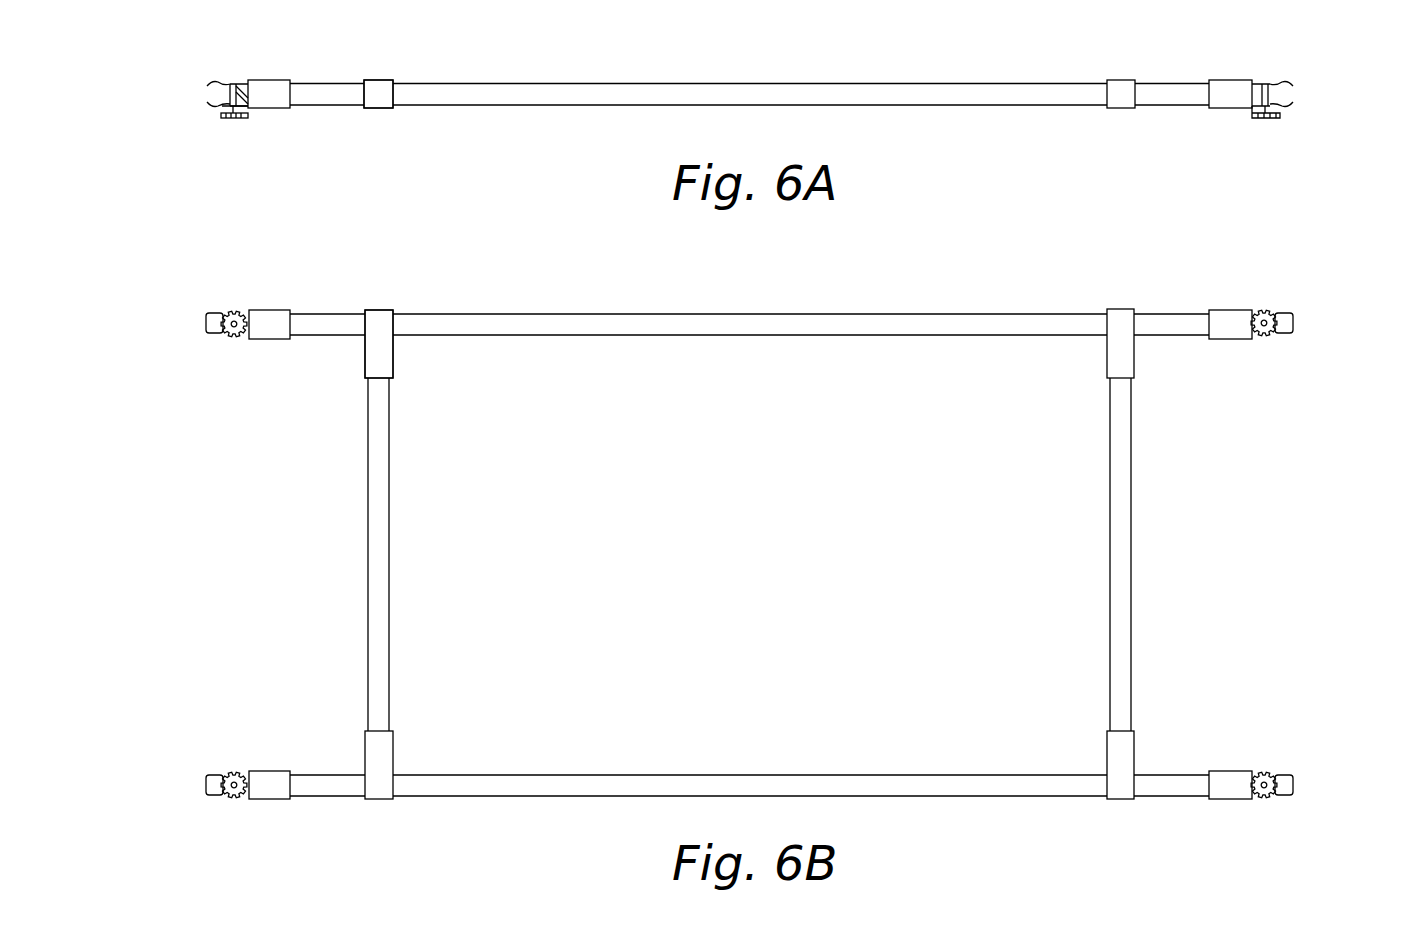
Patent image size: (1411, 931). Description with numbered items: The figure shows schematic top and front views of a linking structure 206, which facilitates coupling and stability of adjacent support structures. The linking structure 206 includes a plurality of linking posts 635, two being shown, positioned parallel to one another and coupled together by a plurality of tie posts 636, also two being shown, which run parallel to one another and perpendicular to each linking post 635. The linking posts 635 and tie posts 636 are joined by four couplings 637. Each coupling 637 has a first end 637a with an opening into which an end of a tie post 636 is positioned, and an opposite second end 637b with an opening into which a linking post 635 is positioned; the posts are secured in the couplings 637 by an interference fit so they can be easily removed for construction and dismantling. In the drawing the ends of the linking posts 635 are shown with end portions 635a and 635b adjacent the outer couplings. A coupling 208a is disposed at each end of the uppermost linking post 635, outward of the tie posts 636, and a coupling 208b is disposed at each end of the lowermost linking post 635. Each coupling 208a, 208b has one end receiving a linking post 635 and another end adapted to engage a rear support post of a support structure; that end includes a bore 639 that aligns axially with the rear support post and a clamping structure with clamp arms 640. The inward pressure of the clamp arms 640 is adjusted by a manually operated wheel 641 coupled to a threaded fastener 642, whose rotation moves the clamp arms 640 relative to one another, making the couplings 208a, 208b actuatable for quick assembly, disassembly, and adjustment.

In FIG. 6A, the linking structure 206 is at (950, 165).
In FIG. 6B, the linking structure 206 is at (1266, 545).
In FIG. 6A, the coupling 208a is at (1283, 68).
In FIG. 6B, the coupling 208a is at (218, 338).
In FIG. 6B, the coupling 208b is at (218, 760).
In FIG. 6A, the linking post 635 is at (726, 83).
In FIG. 6B, the linking post 635 is at (752, 337).
In FIG. 6A, the tube end block 635a is at (268, 80).
In FIG. 6B, the tube end block 635a is at (267, 310).
In FIG. 6A, the tube end fitting 635b is at (230, 82).
In FIG. 6B, the tube end fitting 635b is at (218, 313).
In FIG. 6B, the tie post 636 is at (390, 503).
In FIG. 6A, the coupling 637 is at (378, 110).
In FIG. 6B, the coupling 637 is at (395, 367).
In FIG. 6B, the first end 637a is at (365, 370).
In FIG. 6A, the second end 637b is at (380, 80).
In FIG. 6B, the second end 637b is at (380, 310).
In FIG. 6A, the bore 639 is at (230, 95).
In FIG. 6A, the clamp arms 640 is at (214, 82).
In FIG. 6A, the manually operated wheel 641 is at (233, 119).
In FIG. 6A, the threaded fastener 642 is at (242, 100).